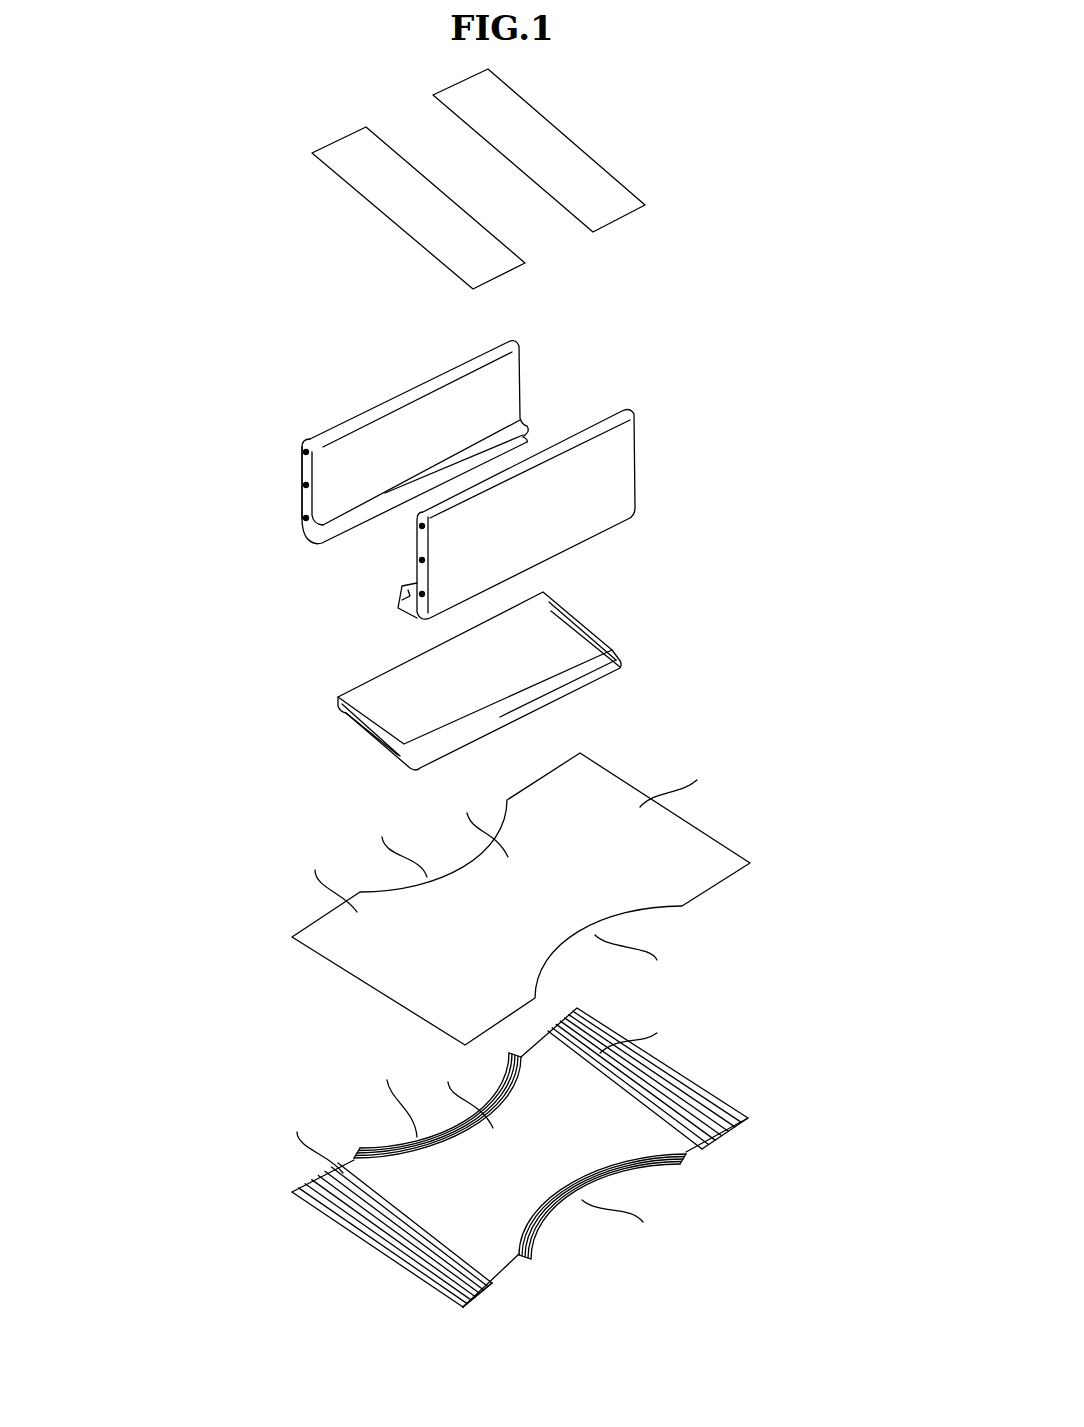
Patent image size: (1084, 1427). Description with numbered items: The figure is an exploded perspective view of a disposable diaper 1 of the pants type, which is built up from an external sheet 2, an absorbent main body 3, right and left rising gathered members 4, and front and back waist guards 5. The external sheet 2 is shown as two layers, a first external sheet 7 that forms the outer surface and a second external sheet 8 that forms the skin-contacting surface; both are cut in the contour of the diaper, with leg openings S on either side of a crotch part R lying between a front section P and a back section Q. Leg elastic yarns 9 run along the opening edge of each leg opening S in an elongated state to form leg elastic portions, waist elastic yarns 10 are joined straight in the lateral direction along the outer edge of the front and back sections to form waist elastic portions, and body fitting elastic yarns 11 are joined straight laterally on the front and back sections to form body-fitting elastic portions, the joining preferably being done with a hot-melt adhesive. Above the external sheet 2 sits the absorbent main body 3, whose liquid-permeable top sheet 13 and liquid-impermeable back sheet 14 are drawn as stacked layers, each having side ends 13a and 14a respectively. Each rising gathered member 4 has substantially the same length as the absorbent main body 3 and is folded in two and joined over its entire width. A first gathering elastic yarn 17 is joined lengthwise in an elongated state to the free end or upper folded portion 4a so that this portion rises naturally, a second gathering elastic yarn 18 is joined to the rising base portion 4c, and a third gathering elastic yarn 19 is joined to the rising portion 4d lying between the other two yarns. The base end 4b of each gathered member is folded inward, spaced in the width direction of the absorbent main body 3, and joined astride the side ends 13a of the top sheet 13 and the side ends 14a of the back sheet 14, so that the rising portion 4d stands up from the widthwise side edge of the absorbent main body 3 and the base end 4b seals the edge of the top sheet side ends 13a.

The disposable diaper of the pants type 1 is at (272, 993).
The external sheet 2 is at (824, 819).
The absorbent main body 3 is at (576, 597).
The rising gathered member 4 is at (536, 374).
The free end (upper folded portion) 4a is at (362, 422).
The base end 4b is at (308, 539).
The rising base portion 4c is at (297, 530).
The rising portion 4d is at (297, 466).
The waist guard 5 is at (393, 212).
The first external sheet 7 is at (678, 1145).
The second external sheet 8 is at (685, 890).
The leg elastic yarn 9 is at (387, 1145).
The waist elastic yarn 10 is at (660, 1063).
The body fitting elastic yarn 11 is at (723, 1112).
The top sheet 13 is at (557, 623).
The side end of the top sheet 13a is at (590, 642).
The back sheet 14 is at (607, 672).
The side end of the back sheet 14a is at (603, 670).
The first gathering elastic yarn 17 is at (298, 462).
The second gathering elastic yarn 18 is at (297, 518).
The third gathering elastic yarn 19 is at (298, 485).